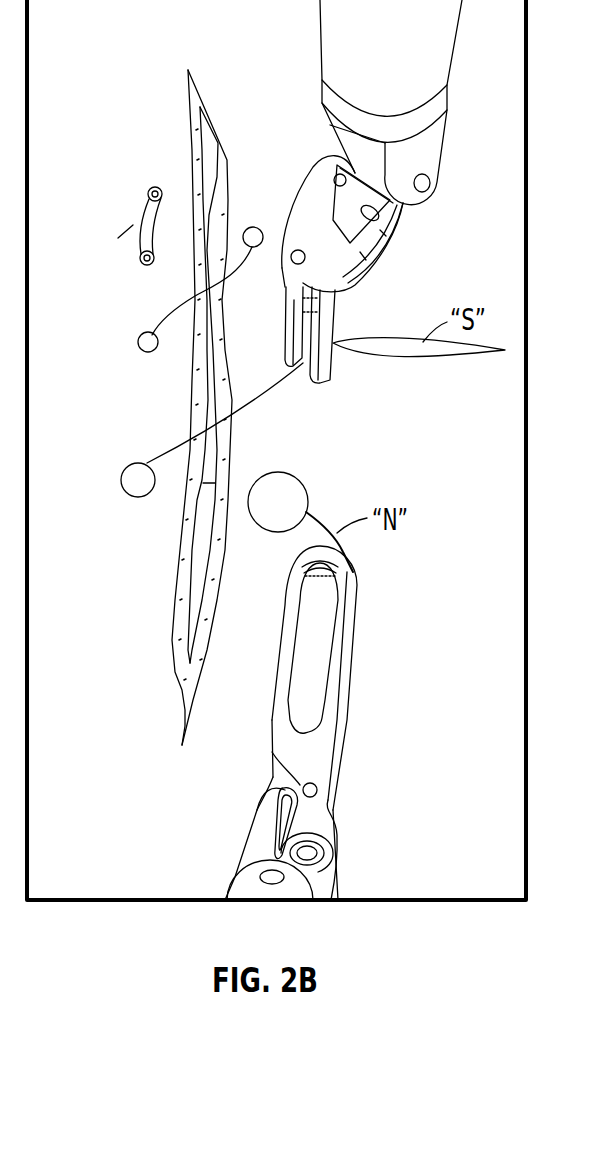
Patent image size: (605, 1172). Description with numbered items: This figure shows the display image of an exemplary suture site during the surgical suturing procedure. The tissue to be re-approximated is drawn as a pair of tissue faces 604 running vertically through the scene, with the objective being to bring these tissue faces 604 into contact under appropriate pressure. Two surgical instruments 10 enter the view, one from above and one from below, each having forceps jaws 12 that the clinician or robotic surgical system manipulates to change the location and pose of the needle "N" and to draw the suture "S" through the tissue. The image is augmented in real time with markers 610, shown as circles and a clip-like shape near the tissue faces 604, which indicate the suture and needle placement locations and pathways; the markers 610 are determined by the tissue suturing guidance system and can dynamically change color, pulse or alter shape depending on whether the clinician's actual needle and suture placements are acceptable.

The surgical instrument 10 is at (447, 167).
The forceps jaws 12 is at (343, 280).
The tissue faces 604 is at (190, 634).
The markers 610 is at (130, 230).